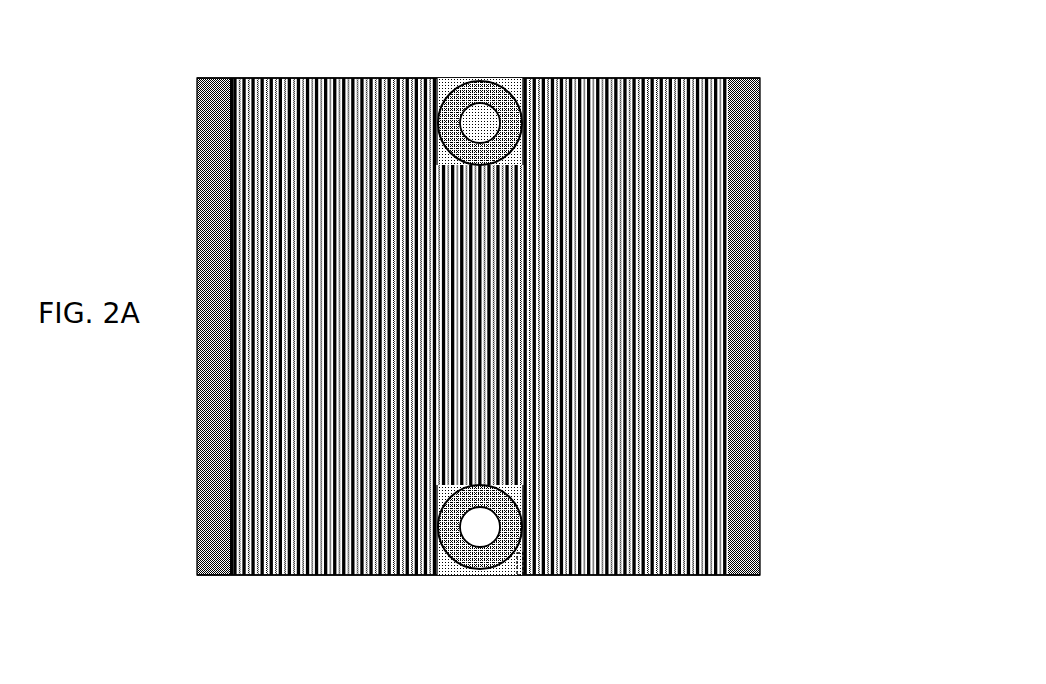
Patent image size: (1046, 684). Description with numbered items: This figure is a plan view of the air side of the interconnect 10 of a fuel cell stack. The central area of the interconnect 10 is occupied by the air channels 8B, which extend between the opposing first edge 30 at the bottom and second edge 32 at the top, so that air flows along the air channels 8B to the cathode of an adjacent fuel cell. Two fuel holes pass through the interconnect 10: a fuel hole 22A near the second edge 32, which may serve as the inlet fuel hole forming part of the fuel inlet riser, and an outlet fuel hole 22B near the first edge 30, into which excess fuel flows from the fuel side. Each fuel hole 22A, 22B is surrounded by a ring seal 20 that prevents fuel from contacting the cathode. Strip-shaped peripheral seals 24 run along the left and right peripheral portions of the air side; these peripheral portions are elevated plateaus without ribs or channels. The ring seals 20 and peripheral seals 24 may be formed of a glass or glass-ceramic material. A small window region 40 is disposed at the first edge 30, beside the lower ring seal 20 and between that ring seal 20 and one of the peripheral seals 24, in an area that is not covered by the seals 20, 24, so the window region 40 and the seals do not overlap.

The interconnect 10 is at (473, 340).
The air channels 8B is at (648, 420).
The ring seals 20 is at (450, 559).
The fuel hole 22A is at (480, 103).
The outlet fuel hole 22B is at (478, 547).
The peripheral seals 24 is at (760, 315).
The first edge 30 is at (623, 575).
The second edge 32 is at (633, 80).
The window region 40 is at (523, 580).